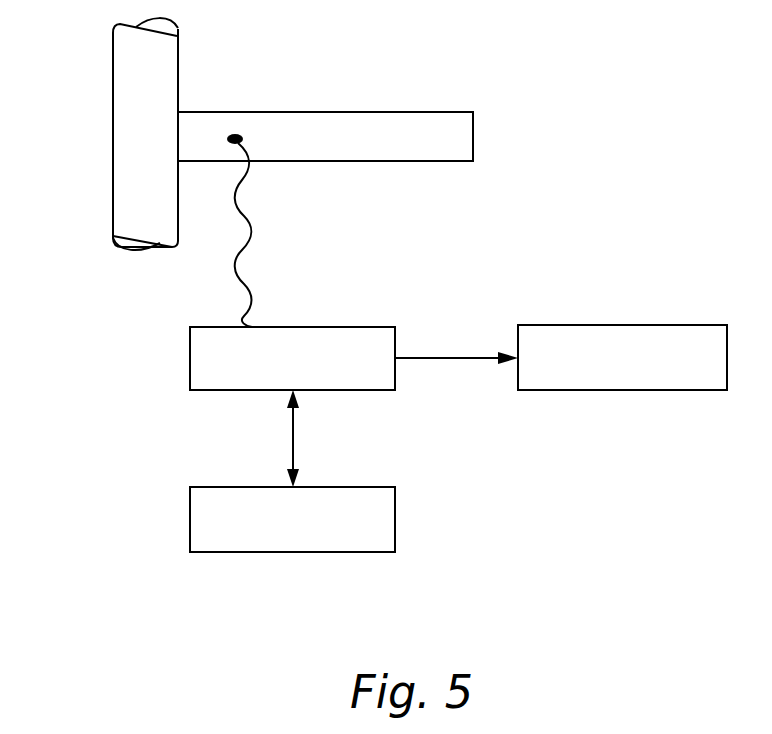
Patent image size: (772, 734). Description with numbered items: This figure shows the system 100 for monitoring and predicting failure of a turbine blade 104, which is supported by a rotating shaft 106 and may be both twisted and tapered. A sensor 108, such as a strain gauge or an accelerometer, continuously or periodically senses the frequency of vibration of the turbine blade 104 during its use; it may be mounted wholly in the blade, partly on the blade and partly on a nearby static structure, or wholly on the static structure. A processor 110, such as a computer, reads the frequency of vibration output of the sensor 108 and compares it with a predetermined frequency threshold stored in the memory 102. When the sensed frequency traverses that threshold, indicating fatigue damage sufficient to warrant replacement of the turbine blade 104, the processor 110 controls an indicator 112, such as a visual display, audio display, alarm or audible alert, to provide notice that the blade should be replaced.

The system 100 is at (636, 148).
The memory 102 is at (377, 487).
The turbine blade 104 is at (440, 112).
The rotating shaft 106 is at (113, 147).
The sensor 108 is at (240, 134).
The processor 110 is at (377, 327).
The indicator 112 is at (625, 325).